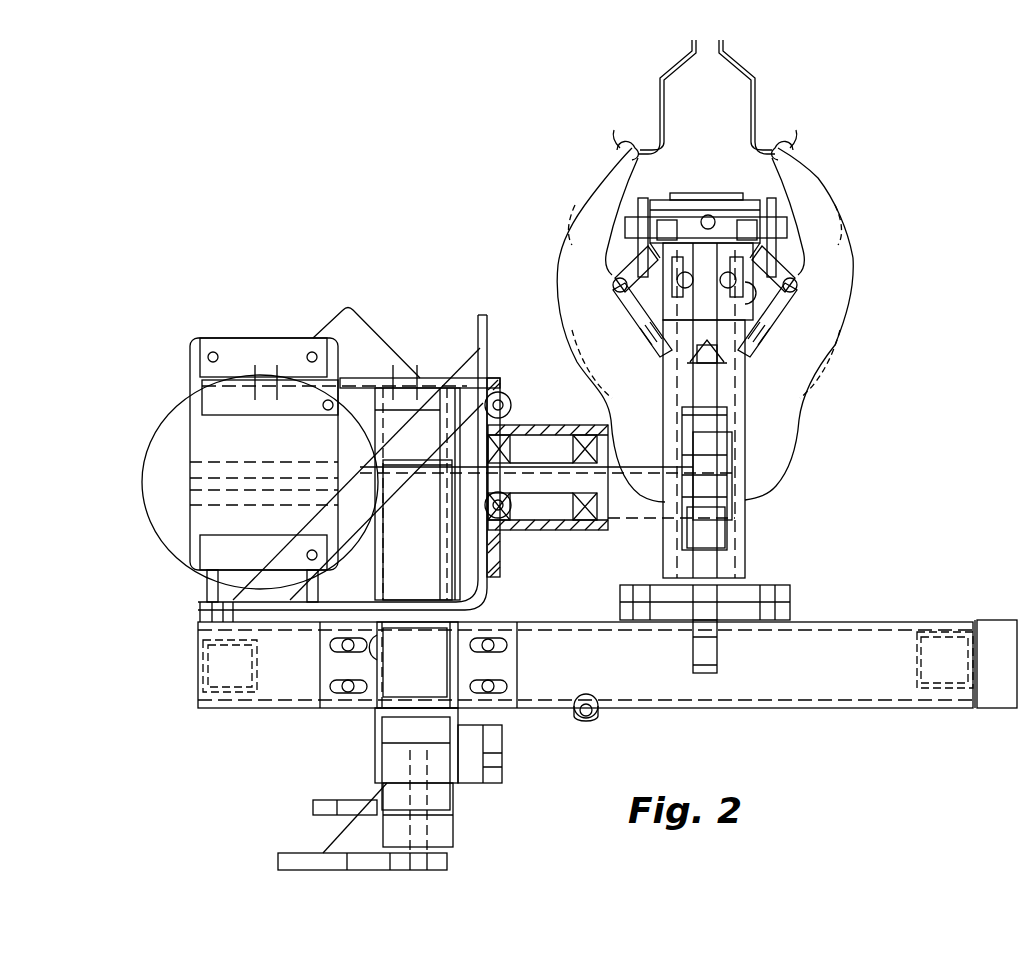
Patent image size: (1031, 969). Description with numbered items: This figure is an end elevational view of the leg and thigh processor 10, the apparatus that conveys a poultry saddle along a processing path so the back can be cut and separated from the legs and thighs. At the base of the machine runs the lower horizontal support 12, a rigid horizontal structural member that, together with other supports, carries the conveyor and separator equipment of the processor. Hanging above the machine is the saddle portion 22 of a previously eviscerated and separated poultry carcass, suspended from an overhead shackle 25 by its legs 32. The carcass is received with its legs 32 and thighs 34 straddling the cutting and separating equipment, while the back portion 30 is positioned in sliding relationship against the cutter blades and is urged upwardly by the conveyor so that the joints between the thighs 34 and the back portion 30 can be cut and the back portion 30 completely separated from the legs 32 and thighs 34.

The leg and thigh processor 10 is at (483, 266).
The lower horizontal support 12 is at (858, 680).
The saddle portion 22 is at (840, 288).
The shackle hanger 25 is at (727, 48).
The back portion 30 is at (770, 472).
The legs 32 is at (830, 228).
The thighs 34 is at (803, 313).